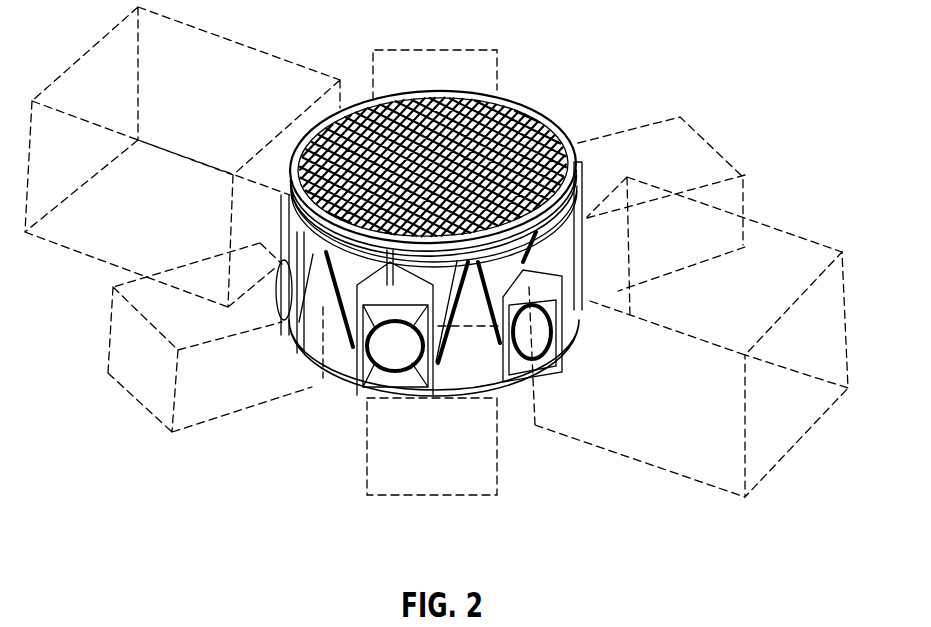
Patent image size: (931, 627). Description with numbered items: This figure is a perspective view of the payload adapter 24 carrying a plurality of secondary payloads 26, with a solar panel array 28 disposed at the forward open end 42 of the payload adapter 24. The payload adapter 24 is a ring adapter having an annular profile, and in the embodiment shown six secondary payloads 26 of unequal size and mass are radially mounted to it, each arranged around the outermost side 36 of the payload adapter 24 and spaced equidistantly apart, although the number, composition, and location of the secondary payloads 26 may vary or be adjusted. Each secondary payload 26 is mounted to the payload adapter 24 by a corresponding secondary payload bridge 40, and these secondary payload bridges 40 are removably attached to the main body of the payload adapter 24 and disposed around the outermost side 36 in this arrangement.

The payload adapter 24 is at (680, 42).
The secondary payloads 26 is at (72, 238).
The solar panel array 28 is at (508, 146).
The outermost side 36 is at (552, 116).
The secondary payload bridge 40 is at (375, 275).
The forward open end 42 is at (471, 88).